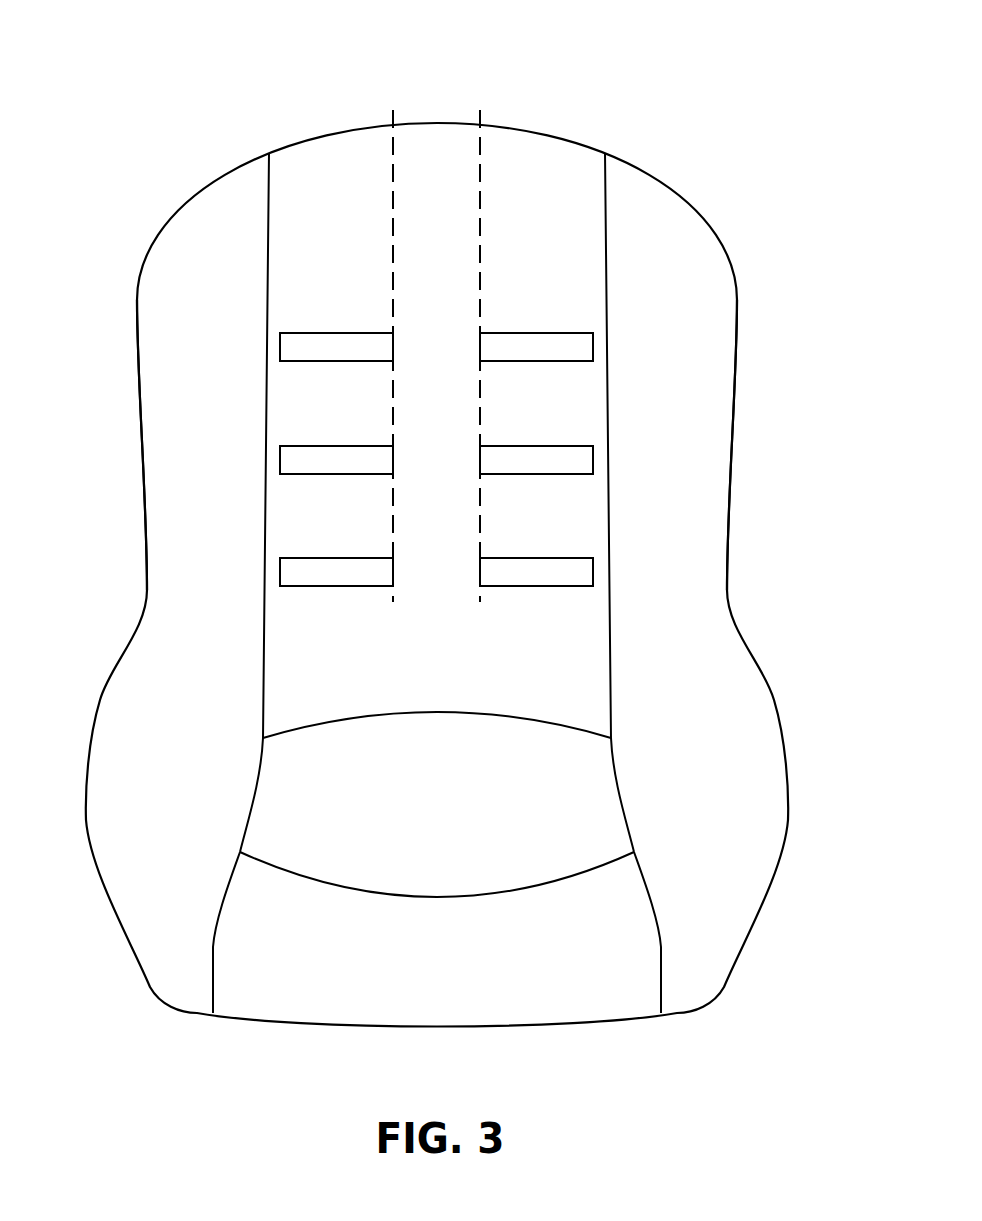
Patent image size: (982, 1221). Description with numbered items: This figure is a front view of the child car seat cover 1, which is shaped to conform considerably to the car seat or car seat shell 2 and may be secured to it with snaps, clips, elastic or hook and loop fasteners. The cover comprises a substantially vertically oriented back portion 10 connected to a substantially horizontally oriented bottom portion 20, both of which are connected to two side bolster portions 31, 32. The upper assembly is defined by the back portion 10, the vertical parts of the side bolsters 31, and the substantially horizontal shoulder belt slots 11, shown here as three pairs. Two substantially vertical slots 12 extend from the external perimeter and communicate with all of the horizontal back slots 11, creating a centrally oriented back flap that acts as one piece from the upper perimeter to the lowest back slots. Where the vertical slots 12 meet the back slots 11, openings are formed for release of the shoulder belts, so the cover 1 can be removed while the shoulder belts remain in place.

The child car seat cover 1 is at (563, 168).
The car seat shell 2 is at (126, 440).
The back portion 10 is at (416, 689).
The shoulder belt slots 11 is at (312, 367).
The vertical slots 12 is at (393, 80).
The bottom portion 20 is at (416, 811).
The side bolster portion 31 is at (208, 272).
The side bolster portion 32 is at (227, 775).